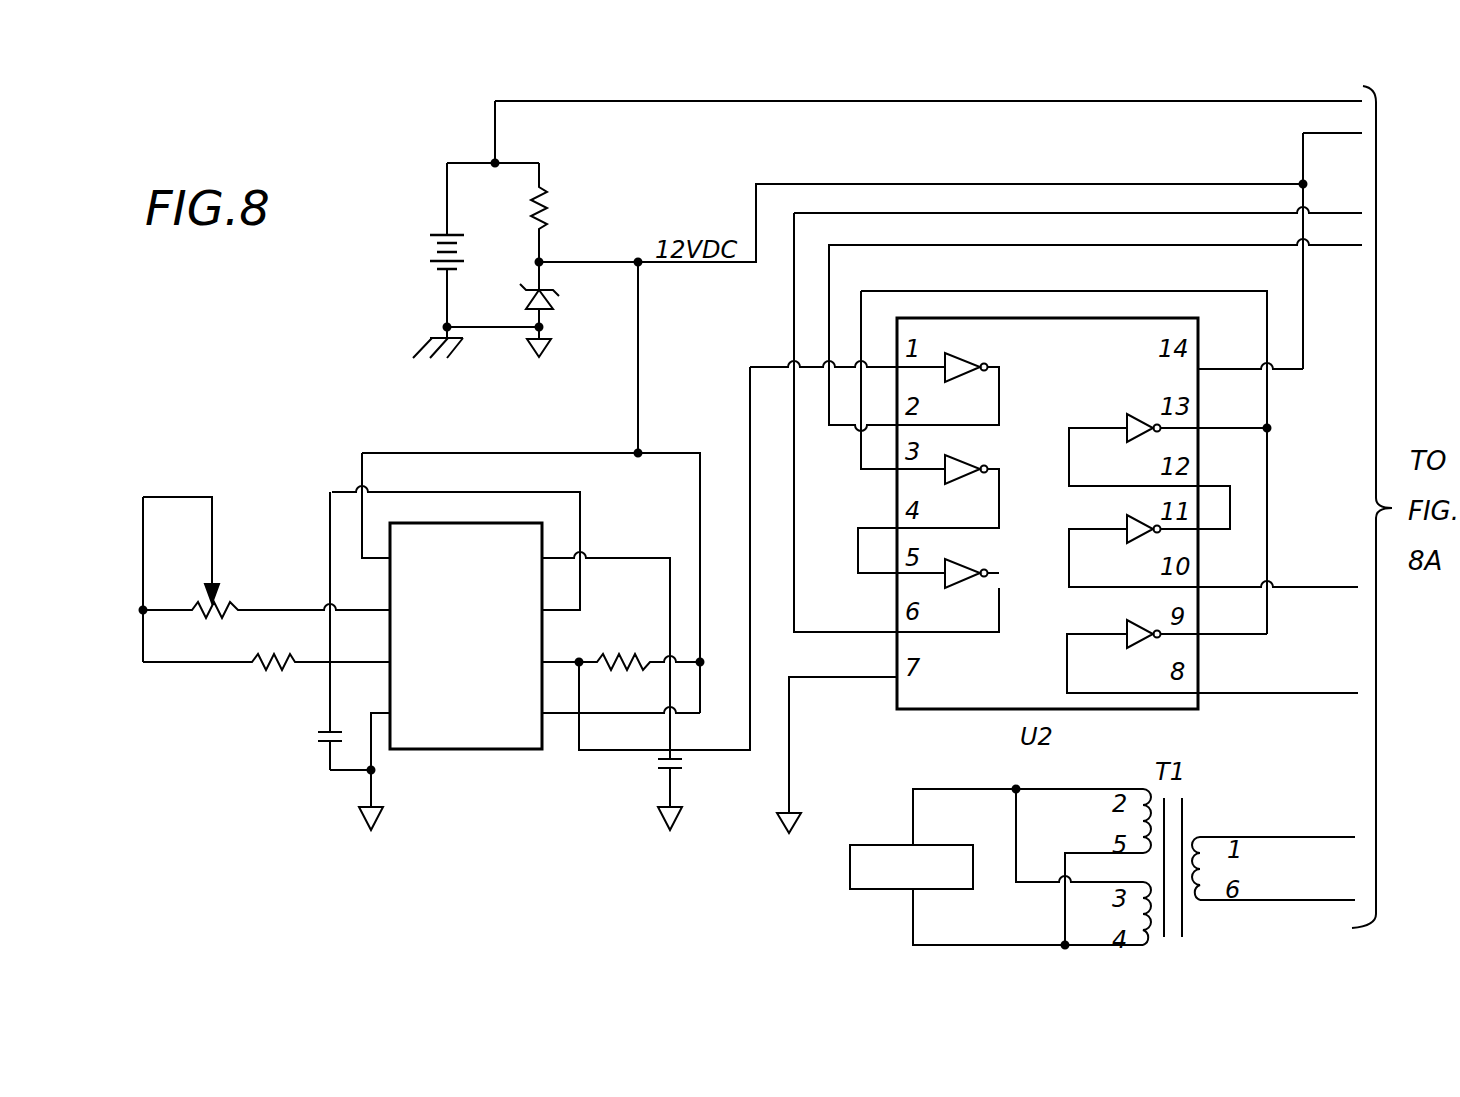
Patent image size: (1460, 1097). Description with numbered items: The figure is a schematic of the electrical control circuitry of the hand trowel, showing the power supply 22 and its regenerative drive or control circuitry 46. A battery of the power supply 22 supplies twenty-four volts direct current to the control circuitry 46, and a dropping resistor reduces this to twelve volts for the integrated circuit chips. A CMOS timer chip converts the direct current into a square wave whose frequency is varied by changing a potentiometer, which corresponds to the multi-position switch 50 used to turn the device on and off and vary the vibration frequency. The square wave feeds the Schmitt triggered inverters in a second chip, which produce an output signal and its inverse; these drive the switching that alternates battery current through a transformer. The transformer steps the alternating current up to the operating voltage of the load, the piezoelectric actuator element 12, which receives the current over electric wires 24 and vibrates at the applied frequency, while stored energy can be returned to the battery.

The power supply 22 is at (395, 214).
The control circuitry 46 is at (305, 345).
The multi-position switch 50 is at (245, 568).
The electric wires 24 is at (958, 789).
The actuator element 12 is at (848, 878).